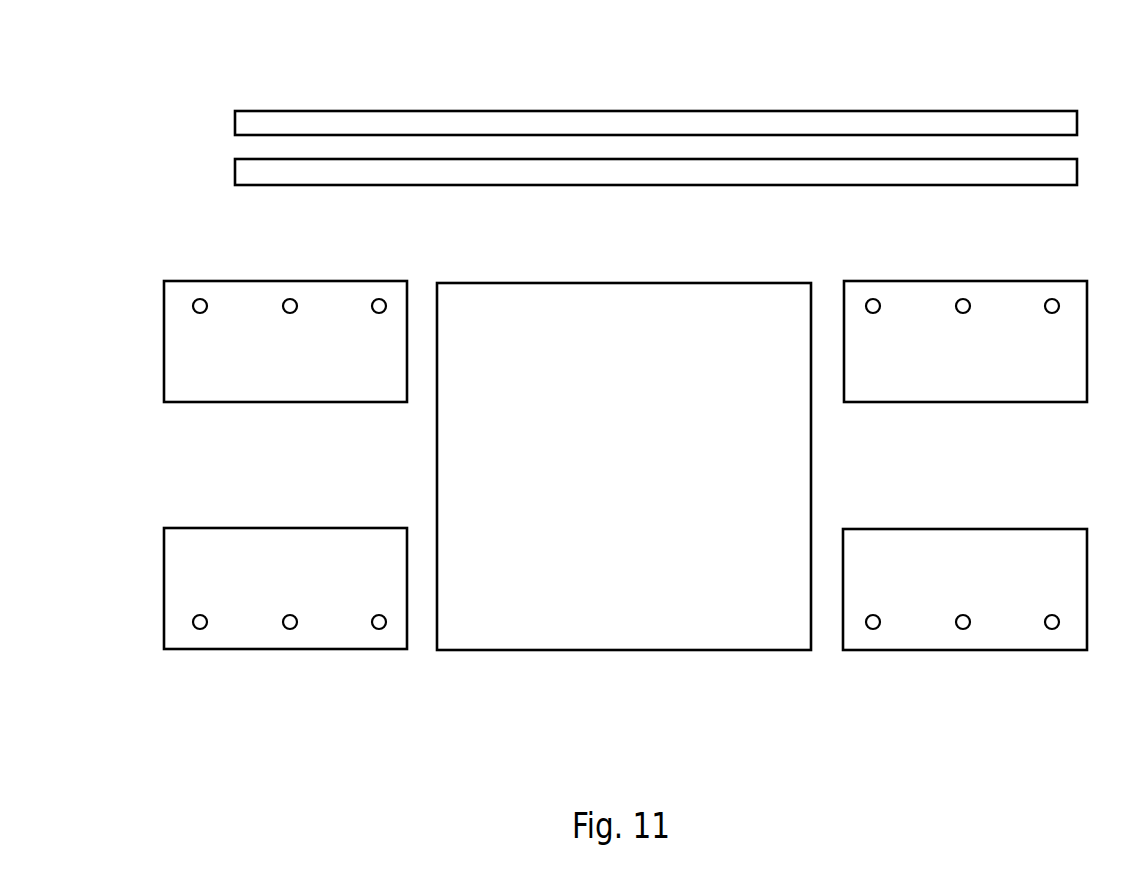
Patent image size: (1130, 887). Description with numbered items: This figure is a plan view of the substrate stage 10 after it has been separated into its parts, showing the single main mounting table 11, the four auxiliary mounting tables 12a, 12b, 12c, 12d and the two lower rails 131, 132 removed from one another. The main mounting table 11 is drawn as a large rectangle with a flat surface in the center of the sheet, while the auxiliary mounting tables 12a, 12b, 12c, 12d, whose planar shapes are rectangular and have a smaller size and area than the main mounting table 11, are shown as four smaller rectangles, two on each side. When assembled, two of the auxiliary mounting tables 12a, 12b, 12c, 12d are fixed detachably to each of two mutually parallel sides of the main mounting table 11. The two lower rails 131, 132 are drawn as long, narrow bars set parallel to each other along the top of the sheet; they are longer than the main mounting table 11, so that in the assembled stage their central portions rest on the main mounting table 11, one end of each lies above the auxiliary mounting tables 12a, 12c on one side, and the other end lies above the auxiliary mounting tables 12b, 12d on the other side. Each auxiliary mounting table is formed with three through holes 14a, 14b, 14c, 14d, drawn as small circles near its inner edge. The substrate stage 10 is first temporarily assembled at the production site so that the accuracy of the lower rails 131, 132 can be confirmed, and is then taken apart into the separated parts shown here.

The substrate stage 10 is at (140, 124).
The main mounting table 11 is at (798, 467).
The auxiliary mounting table 12a is at (872, 281).
The auxiliary mounting table 12b is at (380, 281).
The auxiliary mounting table 12c is at (872, 650).
The auxiliary mounting table 12d is at (382, 649).
The lower rail 131 is at (512, 115).
The lower rail 132 is at (644, 170).
The through holes 14a is at (1046, 304).
The through holes 14b is at (378, 299).
The through holes 14c is at (1046, 627).
The through holes 14d is at (379, 631).